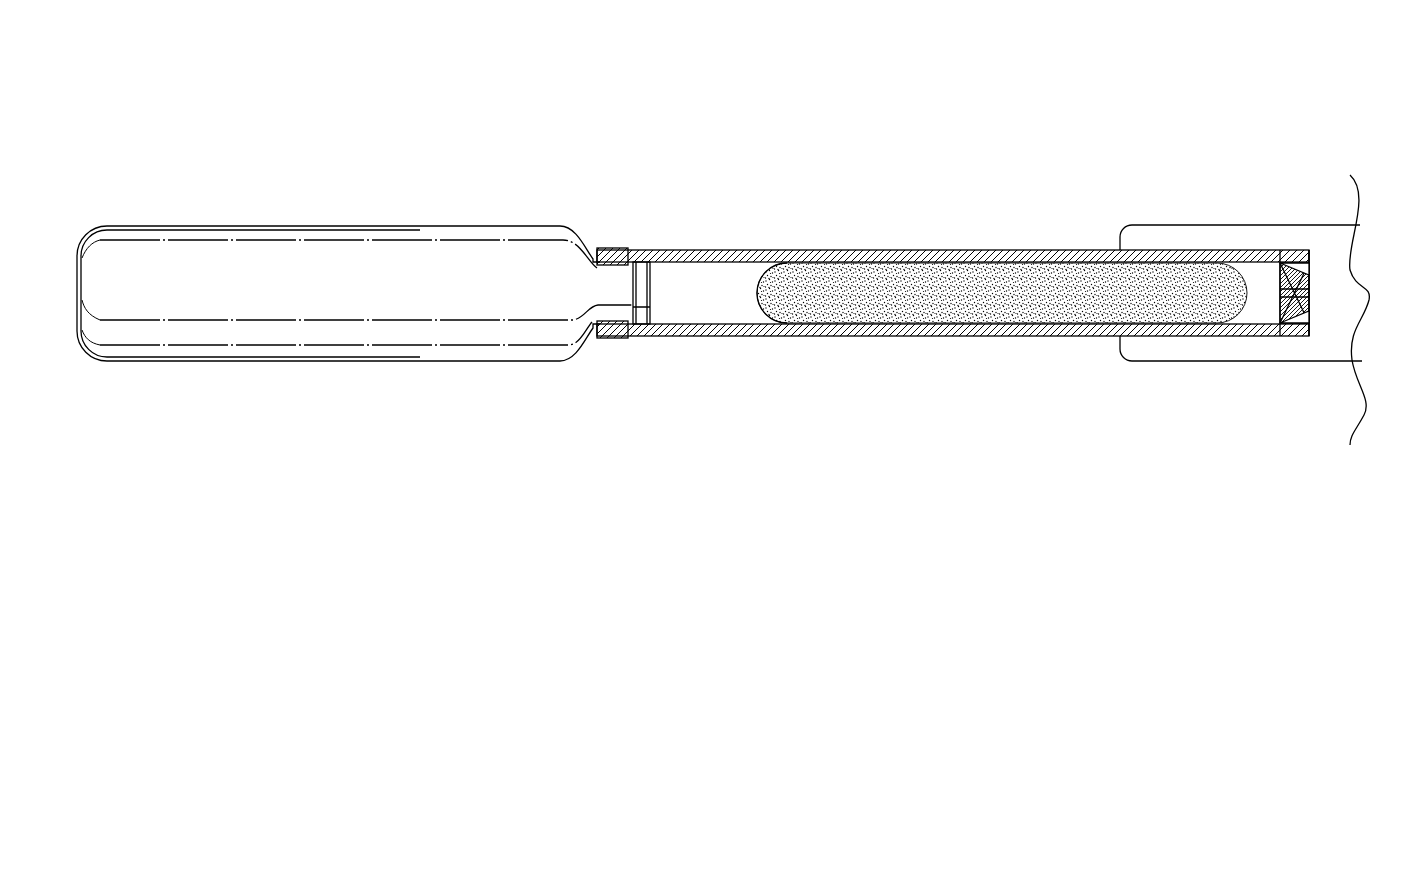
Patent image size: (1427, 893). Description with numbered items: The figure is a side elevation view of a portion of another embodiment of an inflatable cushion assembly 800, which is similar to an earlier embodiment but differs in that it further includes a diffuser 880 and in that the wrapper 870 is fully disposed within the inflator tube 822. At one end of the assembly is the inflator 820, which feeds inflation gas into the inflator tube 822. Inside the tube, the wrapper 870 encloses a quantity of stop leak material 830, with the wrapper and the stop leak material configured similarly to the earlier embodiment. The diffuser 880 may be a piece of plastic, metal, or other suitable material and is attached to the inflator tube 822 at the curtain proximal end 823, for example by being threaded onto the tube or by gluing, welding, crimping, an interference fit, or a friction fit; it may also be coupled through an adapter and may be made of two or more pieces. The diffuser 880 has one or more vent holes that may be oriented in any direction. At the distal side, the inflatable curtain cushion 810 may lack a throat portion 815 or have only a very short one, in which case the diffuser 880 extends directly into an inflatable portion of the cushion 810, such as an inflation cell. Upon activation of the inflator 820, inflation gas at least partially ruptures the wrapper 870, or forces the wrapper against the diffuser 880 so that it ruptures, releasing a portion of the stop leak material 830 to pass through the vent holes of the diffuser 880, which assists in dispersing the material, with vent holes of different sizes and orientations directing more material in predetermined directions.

The inflatable cushion assembly 800 is at (964, 118).
The inflatable curtain cushion 810 is at (1169, 227).
The throat portion 815 is at (1347, 284).
The inflator 820 is at (300, 258).
The inflator tube 822 is at (677, 252).
The curtain proximal end 823 is at (1283, 248).
The stop leak material 830 is at (940, 287).
The wrapper 870 is at (755, 297).
The diffuser 880 is at (1312, 316).